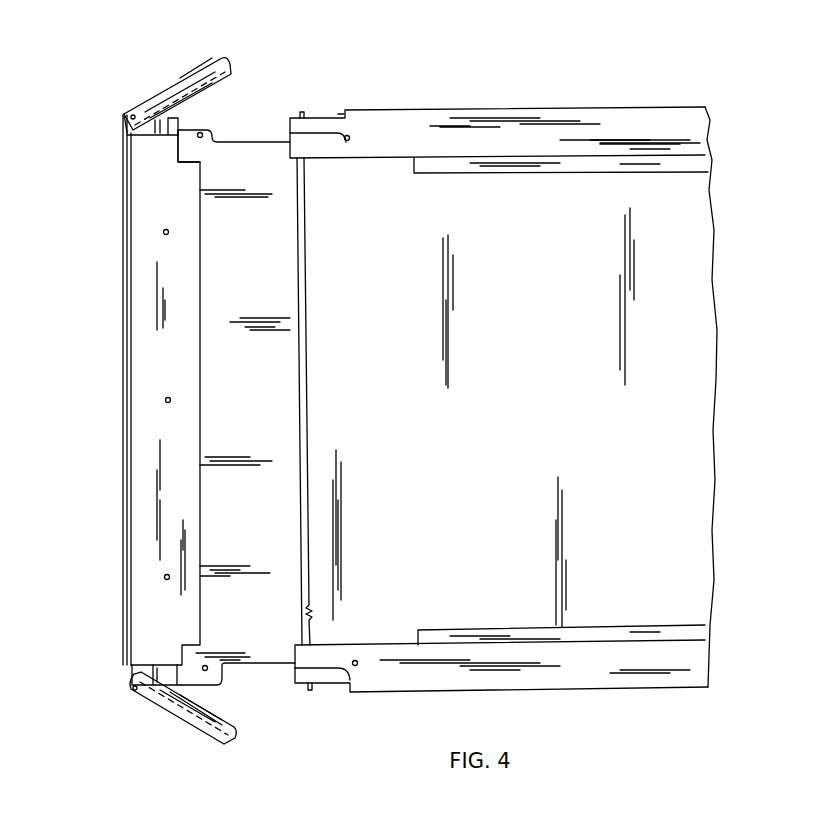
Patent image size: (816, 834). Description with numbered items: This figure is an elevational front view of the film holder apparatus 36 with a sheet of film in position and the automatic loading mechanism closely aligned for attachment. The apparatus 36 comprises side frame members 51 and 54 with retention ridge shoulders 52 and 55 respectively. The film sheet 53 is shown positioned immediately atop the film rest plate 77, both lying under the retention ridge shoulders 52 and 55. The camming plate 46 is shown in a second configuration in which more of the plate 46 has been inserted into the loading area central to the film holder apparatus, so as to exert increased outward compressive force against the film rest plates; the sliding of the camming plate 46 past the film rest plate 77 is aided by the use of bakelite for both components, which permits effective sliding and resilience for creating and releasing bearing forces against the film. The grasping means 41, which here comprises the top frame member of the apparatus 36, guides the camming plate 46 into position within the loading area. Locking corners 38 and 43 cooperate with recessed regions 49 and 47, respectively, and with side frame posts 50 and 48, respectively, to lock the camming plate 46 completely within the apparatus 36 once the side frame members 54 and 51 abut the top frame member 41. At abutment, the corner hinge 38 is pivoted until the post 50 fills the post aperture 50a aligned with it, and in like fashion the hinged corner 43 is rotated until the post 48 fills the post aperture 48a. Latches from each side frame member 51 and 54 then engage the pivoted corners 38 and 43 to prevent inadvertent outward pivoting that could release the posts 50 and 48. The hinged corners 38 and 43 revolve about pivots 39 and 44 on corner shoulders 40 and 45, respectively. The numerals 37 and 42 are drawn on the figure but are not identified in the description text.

The film holder apparatus 36 is at (512, 104).
The upper bracket 37 is at (196, 126).
The locking corner 38 is at (176, 86).
The pivot 39 is at (124, 117).
The corner shoulder 40 is at (124, 136).
The grasping means 41 is at (138, 303).
The apertures in side member 42 is at (165, 400).
The locking corner 43 is at (166, 702).
The pivot 44 is at (134, 690).
The corner shoulder 45 is at (132, 674).
The camming plate 46 is at (262, 645).
The recessed region 47 is at (338, 676).
The side frame post 48 is at (310, 690).
The post aperture 48a is at (184, 724).
The recessed region 49 is at (332, 117).
The side frame post 50 is at (303, 114).
The post aperture 50a is at (185, 83).
The side frame member 51 is at (630, 125).
The retention ridge shoulder 52 is at (695, 160).
The film sheet 53 is at (688, 401).
The side frame member 54 is at (683, 668).
The retention ridge shoulder 55 is at (598, 632).
The film rest plate 77 is at (302, 640).